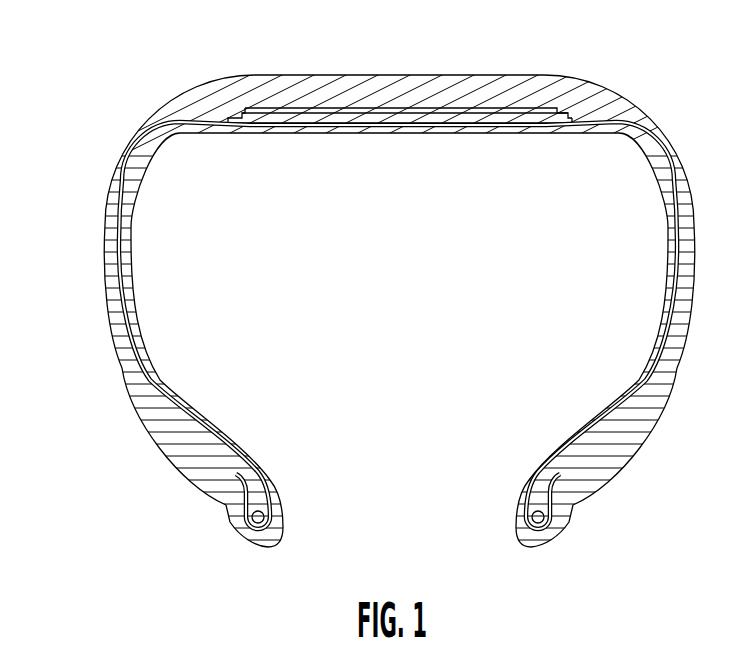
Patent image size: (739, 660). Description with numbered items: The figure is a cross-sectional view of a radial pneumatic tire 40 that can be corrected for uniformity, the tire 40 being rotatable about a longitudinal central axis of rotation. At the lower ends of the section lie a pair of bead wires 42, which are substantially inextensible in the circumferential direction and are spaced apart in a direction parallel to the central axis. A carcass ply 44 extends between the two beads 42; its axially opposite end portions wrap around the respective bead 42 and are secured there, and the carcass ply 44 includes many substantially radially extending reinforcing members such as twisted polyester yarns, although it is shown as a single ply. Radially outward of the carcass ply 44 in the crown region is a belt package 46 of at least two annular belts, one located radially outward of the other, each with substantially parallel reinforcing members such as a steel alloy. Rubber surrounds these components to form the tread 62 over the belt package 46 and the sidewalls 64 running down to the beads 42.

The radial pneumatic tire 40 is at (657, 129).
The bead wire 42 is at (258, 517).
The carcass ply 44 is at (550, 462).
The belt package 46 is at (282, 108).
The tread 62 is at (395, 90).
The sidewall 64 is at (105, 270).